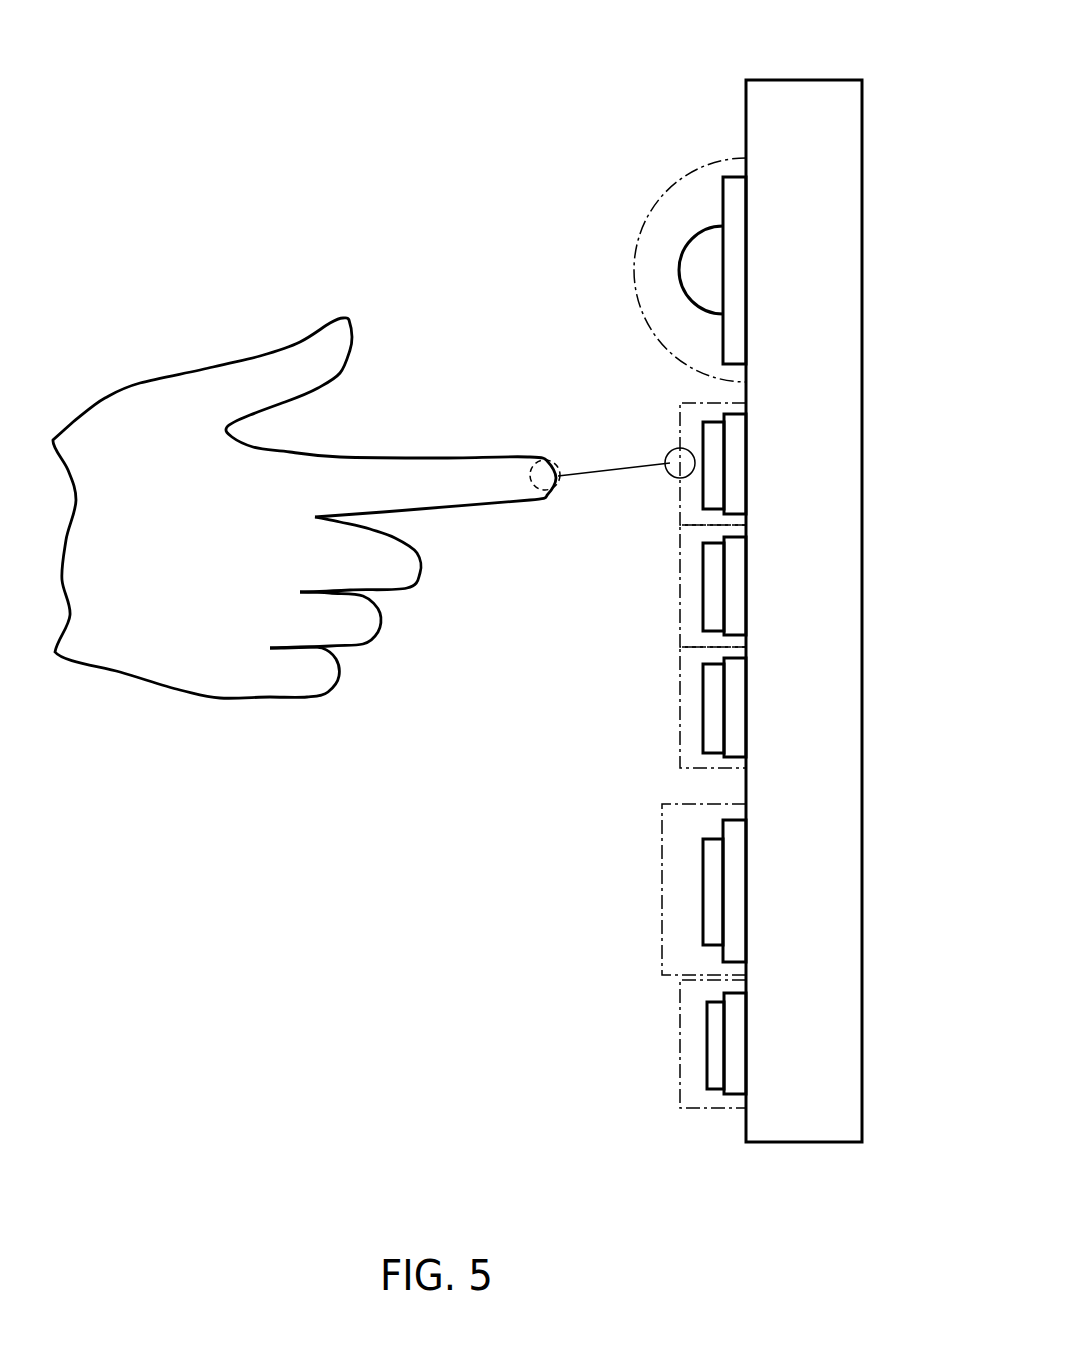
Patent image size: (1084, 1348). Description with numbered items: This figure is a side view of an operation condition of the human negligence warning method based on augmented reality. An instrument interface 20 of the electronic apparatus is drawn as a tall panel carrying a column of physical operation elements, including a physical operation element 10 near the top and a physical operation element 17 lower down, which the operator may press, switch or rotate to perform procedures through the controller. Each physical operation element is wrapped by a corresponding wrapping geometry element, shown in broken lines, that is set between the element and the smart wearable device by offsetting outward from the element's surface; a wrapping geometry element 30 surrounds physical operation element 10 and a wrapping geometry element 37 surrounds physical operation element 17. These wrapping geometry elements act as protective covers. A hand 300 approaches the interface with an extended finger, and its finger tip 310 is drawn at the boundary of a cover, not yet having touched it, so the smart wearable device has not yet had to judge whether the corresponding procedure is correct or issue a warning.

The hand 300 is at (222, 362).
The finger tip 310 is at (532, 460).
The instrument interface 20 is at (780, 80).
The physical operation element 10 is at (707, 270).
The wrapping geometry element 30 is at (645, 222).
The physical operation element 17 is at (713, 902).
The wrapping geometry element 37 is at (662, 860).